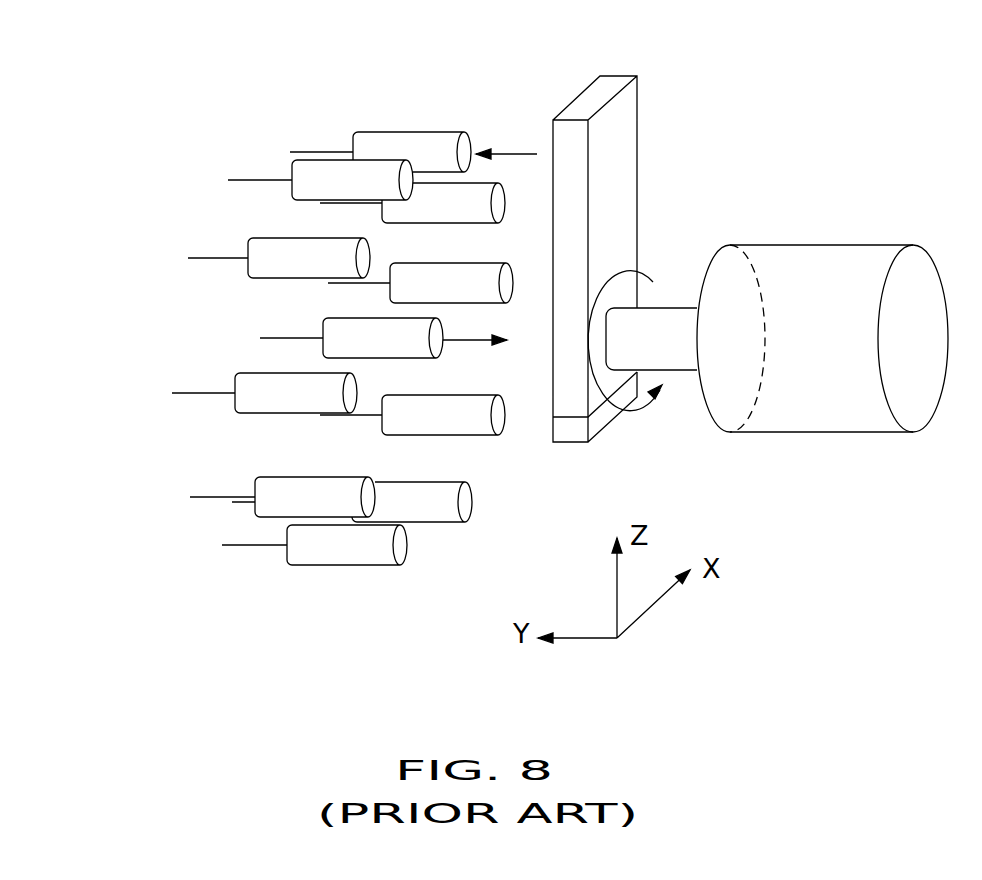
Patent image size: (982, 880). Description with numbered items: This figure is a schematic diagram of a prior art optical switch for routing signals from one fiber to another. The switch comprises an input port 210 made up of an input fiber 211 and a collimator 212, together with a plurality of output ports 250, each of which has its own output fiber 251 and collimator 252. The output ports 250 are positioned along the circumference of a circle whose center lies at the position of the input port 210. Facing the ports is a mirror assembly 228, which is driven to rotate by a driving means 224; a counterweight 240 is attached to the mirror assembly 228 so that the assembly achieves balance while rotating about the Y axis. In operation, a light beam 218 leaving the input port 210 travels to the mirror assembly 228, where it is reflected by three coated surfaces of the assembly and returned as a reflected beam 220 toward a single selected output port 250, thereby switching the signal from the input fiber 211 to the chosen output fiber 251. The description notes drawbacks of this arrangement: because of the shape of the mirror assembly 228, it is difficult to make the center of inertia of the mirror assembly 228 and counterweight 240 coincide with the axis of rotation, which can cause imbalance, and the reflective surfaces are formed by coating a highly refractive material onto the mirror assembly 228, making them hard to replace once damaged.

The input port 210 is at (260, 331).
The input fiber 211 is at (290, 338).
The collimator 212 is at (350, 338).
The light beam 218 is at (473, 340).
The output light beam 220 is at (502, 150).
The driving means 224 is at (823, 262).
The mirror assembly 228 is at (627, 125).
The counterweight 240 is at (575, 427).
The output ports 250 is at (327, 383).
The output fiber 251 is at (322, 152).
The collimator 252 is at (380, 143).